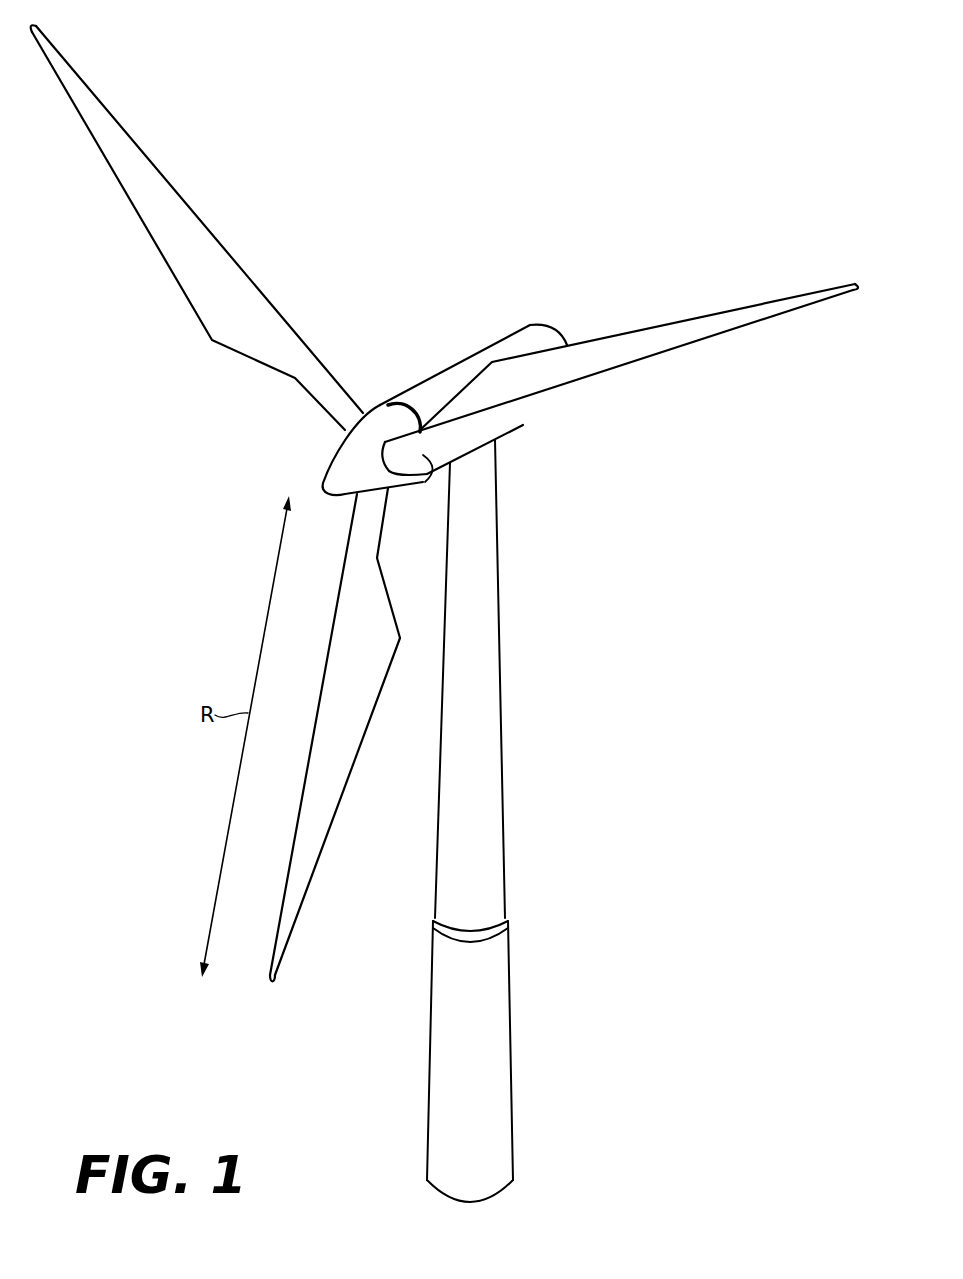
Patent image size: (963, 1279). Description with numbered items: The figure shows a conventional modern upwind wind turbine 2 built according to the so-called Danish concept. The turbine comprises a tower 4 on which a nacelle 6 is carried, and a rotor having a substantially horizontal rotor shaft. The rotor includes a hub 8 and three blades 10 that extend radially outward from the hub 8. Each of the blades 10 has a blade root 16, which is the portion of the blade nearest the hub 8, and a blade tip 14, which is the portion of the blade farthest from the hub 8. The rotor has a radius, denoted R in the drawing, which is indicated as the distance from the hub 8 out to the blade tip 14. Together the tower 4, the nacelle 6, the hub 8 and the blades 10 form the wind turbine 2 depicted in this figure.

The wind turbine 2 is at (608, 760).
The tower 4 is at (488, 683).
The nacelle 6 is at (435, 387).
The hub 8 is at (343, 472).
The blades 10 is at (227, 313).
The blade tip 14 is at (73, 80).
The blade root 16 is at (342, 415).